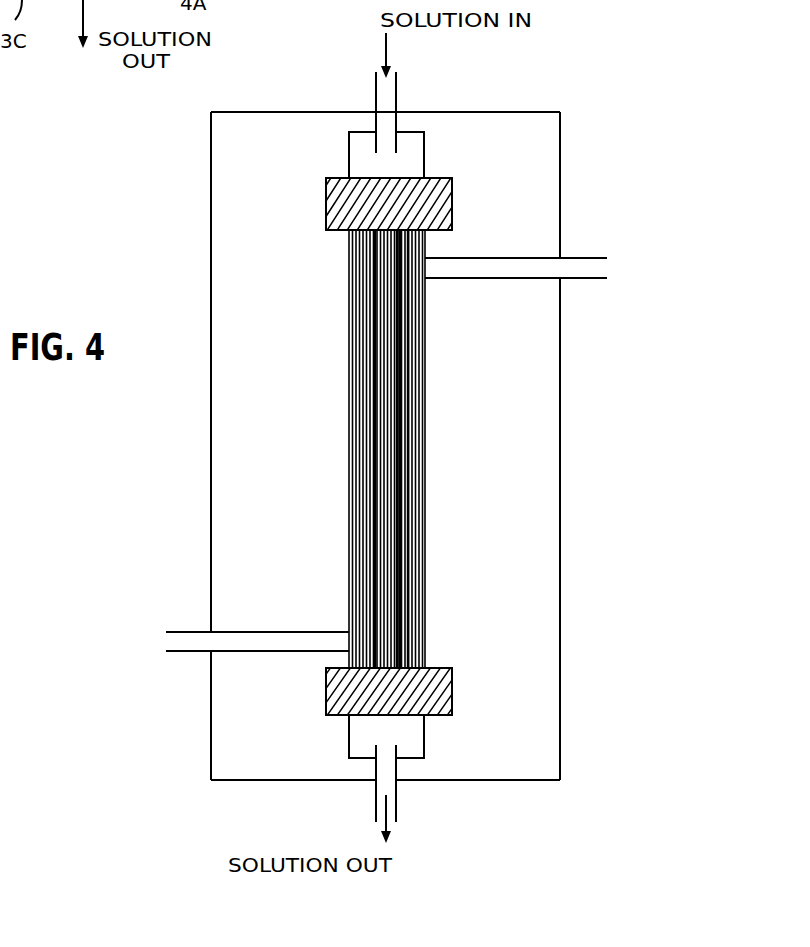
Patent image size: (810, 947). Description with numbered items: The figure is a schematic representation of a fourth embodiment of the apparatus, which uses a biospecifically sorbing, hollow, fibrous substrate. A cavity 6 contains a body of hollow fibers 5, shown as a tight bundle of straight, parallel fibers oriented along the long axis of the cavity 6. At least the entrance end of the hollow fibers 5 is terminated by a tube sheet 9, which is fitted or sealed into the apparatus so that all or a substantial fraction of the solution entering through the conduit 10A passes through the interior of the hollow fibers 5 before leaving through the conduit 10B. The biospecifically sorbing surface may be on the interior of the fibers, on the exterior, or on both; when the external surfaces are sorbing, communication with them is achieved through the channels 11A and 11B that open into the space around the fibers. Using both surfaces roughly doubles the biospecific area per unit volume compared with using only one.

The hollow fibers 5 is at (393, 427).
The cavity 6 is at (410, 152).
The tube sheet 9 is at (438, 200).
The conduit 10A is at (400, 90).
The conduit 10B is at (385, 770).
The channel 11A is at (585, 258).
The channel 11B is at (178, 632).